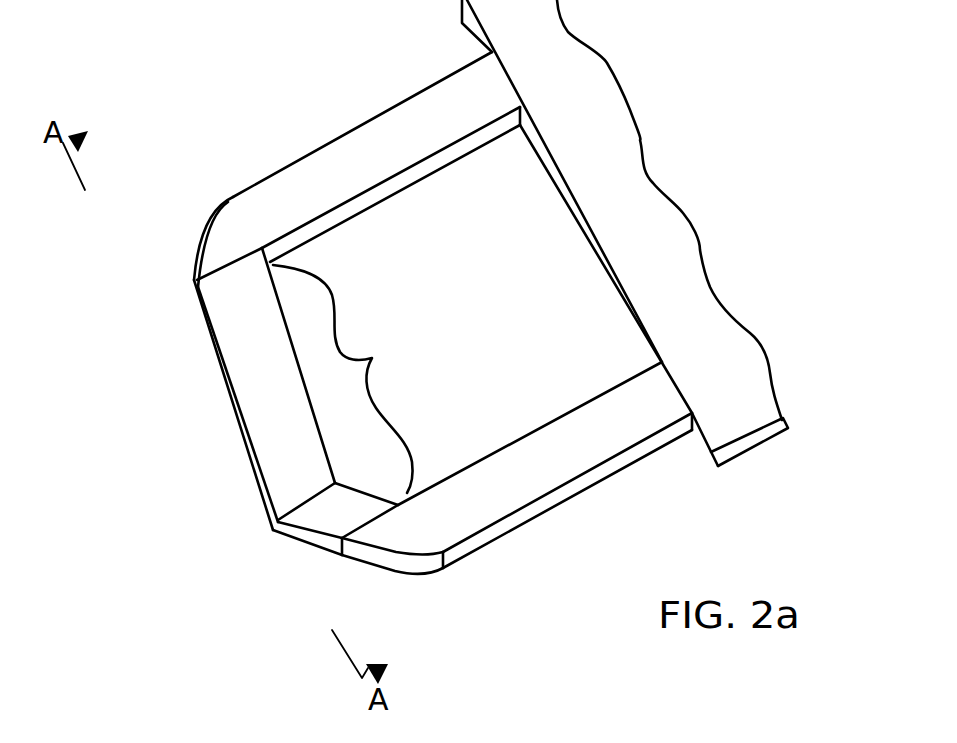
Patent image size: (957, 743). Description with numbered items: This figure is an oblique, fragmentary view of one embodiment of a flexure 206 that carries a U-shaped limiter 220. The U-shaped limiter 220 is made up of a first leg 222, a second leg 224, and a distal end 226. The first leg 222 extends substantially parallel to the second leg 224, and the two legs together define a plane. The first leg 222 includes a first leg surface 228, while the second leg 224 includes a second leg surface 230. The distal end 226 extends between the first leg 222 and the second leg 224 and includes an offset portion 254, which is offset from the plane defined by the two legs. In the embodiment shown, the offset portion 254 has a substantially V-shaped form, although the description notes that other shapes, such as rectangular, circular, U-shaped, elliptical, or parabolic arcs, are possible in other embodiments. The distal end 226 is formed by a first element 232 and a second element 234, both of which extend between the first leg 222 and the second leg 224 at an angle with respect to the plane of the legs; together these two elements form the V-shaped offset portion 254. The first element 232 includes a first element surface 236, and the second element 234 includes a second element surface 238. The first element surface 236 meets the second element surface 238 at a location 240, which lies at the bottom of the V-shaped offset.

The flexure 206 is at (615, 208).
The U-shaped limiter 220 is at (463, 82).
The first leg 222 is at (600, 472).
The second leg 224 is at (352, 128).
The distal end 226 is at (278, 420).
The first leg surface 228 is at (513, 503).
The second leg surface 230 is at (347, 190).
The first element 232 is at (322, 538).
The second element 234 is at (207, 333).
The first element surface 236 is at (358, 524).
The second element surface 238 is at (283, 386).
The location 240 is at (277, 513).
The offset portion 254 is at (349, 379).